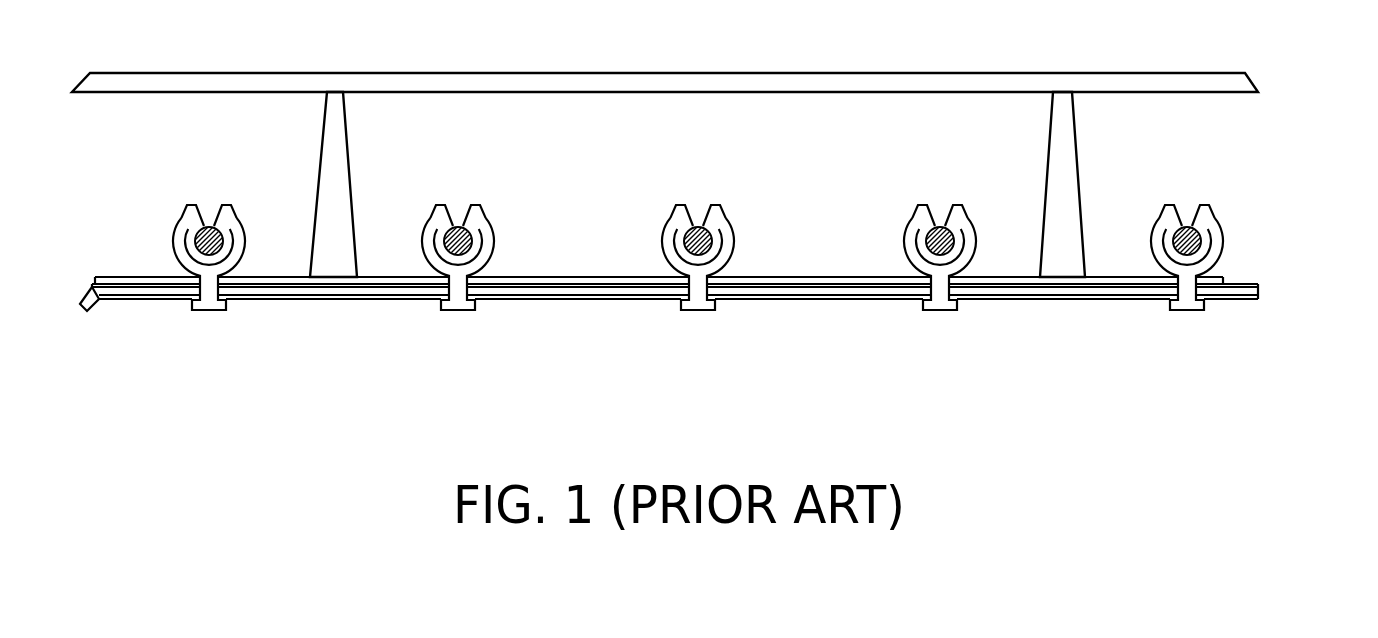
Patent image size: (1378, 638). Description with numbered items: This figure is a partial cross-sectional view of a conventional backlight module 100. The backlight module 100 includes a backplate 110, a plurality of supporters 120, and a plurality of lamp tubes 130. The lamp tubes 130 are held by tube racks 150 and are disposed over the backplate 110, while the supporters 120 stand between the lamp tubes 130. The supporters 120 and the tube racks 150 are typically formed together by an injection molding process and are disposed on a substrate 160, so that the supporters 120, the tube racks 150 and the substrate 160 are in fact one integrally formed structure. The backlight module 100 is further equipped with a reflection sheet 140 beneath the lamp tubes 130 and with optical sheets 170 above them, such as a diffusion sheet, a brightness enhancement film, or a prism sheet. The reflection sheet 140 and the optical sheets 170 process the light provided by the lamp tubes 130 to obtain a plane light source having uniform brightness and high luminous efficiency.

The backlight module 100 is at (1262, 399).
The backplate 110 is at (1258, 293).
The supporters 120 is at (327, 127).
The lamp tubes 130 is at (1186, 222).
The reflection sheet 140 is at (1250, 284).
The tube racks 150 is at (1207, 223).
The substrate 160 is at (1220, 277).
The optical sheets 170 is at (1257, 86).